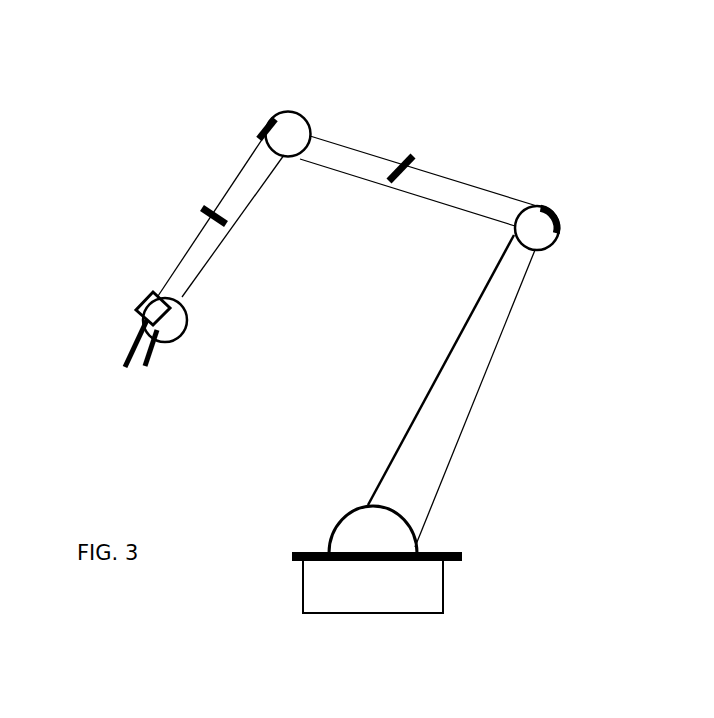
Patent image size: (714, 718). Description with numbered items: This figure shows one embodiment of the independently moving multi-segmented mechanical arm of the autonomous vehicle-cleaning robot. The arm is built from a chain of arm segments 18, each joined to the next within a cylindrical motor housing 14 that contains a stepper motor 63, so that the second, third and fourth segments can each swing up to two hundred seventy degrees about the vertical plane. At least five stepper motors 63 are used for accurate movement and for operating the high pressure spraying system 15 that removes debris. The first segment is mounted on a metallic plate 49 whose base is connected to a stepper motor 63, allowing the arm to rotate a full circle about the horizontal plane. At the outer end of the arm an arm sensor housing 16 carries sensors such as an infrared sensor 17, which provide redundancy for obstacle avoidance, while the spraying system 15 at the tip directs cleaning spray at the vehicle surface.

The cylindrical motor housing 14 is at (513, 230).
The high pressure spraying system 15 is at (137, 375).
The arm sensor housing 16 is at (143, 297).
The infrared (IR) sensor 17 is at (253, 133).
The arm segment 18 is at (182, 253).
The metallic plate 49 is at (465, 556).
The stepper motor 63 is at (300, 112).